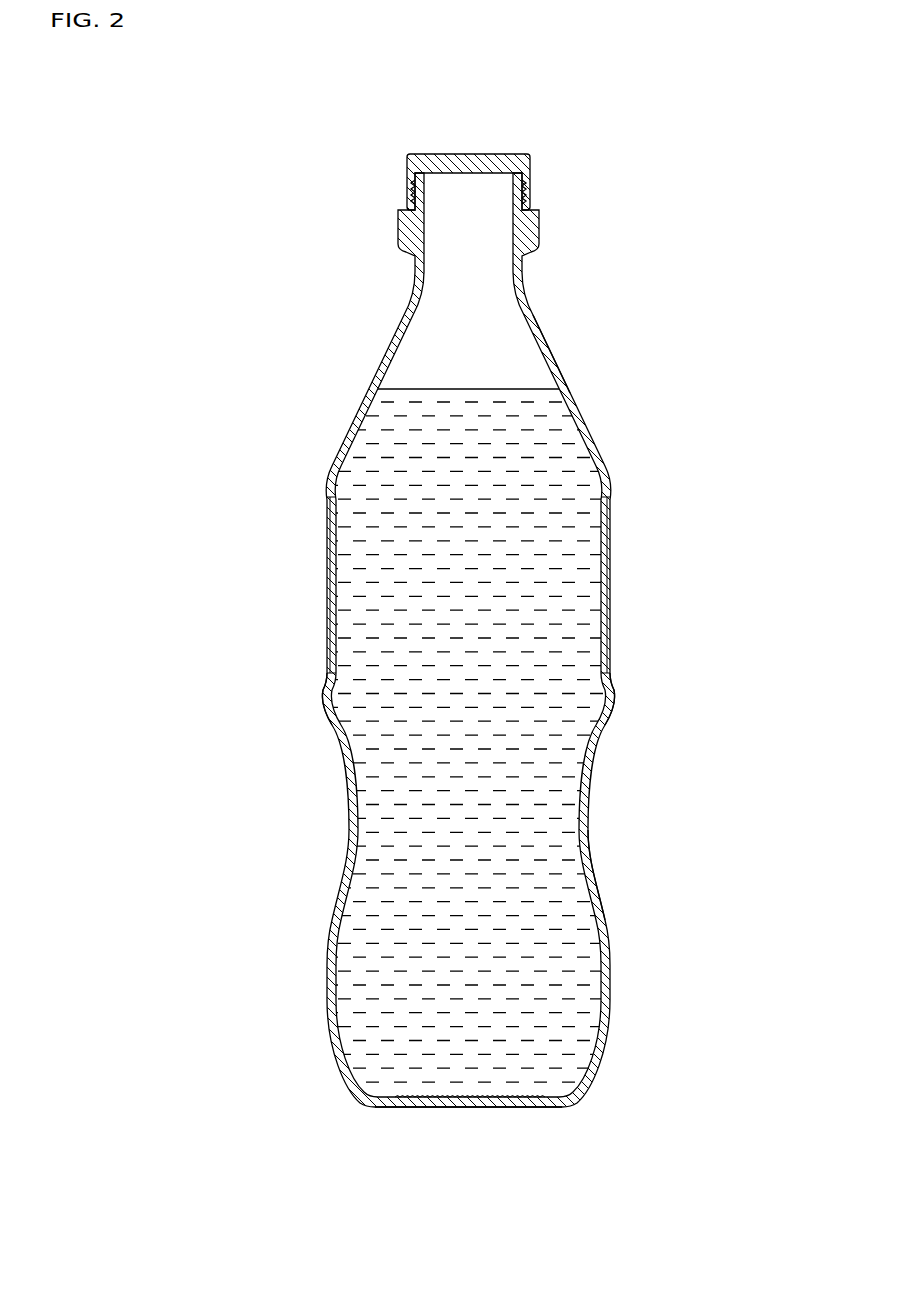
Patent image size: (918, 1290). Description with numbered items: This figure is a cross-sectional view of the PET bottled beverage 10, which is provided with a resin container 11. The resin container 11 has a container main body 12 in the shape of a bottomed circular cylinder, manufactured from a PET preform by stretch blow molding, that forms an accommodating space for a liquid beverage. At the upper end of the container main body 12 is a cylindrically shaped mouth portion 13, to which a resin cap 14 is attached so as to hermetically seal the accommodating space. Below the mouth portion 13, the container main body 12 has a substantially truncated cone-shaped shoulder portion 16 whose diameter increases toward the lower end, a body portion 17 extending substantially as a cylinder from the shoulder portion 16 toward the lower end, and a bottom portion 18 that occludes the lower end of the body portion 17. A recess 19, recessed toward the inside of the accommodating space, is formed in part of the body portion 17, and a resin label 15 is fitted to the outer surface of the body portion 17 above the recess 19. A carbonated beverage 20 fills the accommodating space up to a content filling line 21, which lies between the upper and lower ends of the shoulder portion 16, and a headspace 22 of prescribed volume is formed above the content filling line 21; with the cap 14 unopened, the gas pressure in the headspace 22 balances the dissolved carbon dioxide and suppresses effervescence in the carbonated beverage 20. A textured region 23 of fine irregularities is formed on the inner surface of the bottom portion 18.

The PET bottled beverage 10 is at (655, 147).
The resin container 11 is at (382, 355).
The container main body 12 is at (325, 703).
The mouth portion 13 is at (530, 193).
The cap 14 is at (507, 153).
The label 15 is at (328, 563).
The shoulder portion 16 is at (556, 360).
The body portion 17 is at (612, 700).
The bottom portion 18 is at (535, 1107).
The recess 19 is at (588, 837).
The carbonated beverage 20 is at (567, 432).
The content filling line 21 is at (486, 390).
The headspace 22 is at (484, 292).
The textured region 23 is at (485, 1097).